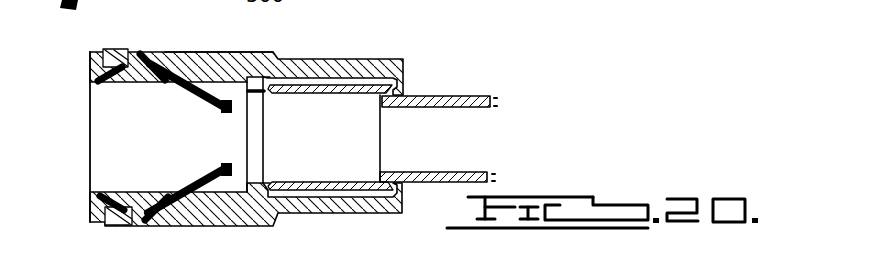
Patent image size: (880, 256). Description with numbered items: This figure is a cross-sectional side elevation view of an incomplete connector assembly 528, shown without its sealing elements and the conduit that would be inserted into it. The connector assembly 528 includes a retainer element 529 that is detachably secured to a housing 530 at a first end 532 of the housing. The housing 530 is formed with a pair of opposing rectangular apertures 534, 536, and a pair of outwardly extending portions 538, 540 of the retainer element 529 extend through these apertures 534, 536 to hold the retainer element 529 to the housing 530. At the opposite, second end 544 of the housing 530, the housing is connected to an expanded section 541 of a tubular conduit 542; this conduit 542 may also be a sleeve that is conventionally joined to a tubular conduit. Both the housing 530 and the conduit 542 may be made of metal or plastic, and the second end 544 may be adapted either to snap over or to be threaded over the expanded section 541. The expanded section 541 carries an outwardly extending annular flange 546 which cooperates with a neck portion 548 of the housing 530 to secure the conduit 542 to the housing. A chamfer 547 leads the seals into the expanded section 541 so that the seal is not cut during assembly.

The connector assembly 528 is at (222, 129).
The retainer element 529 is at (205, 95).
The housing 530 is at (364, 61).
The first end 532 is at (125, 52).
The rectangular aperture 534 is at (166, 60).
The rectangular aperture 536 is at (165, 224).
The outwardly extending portion 538 is at (138, 62).
The outwardly extending portion 540 is at (135, 224).
The expanded section 541 is at (332, 94).
The tubular conduit 542 is at (463, 94).
The second end 544 is at (355, 212).
The annular flange 546 is at (286, 182).
The chamfer 547 is at (265, 100).
The neck portion 548 is at (248, 94).